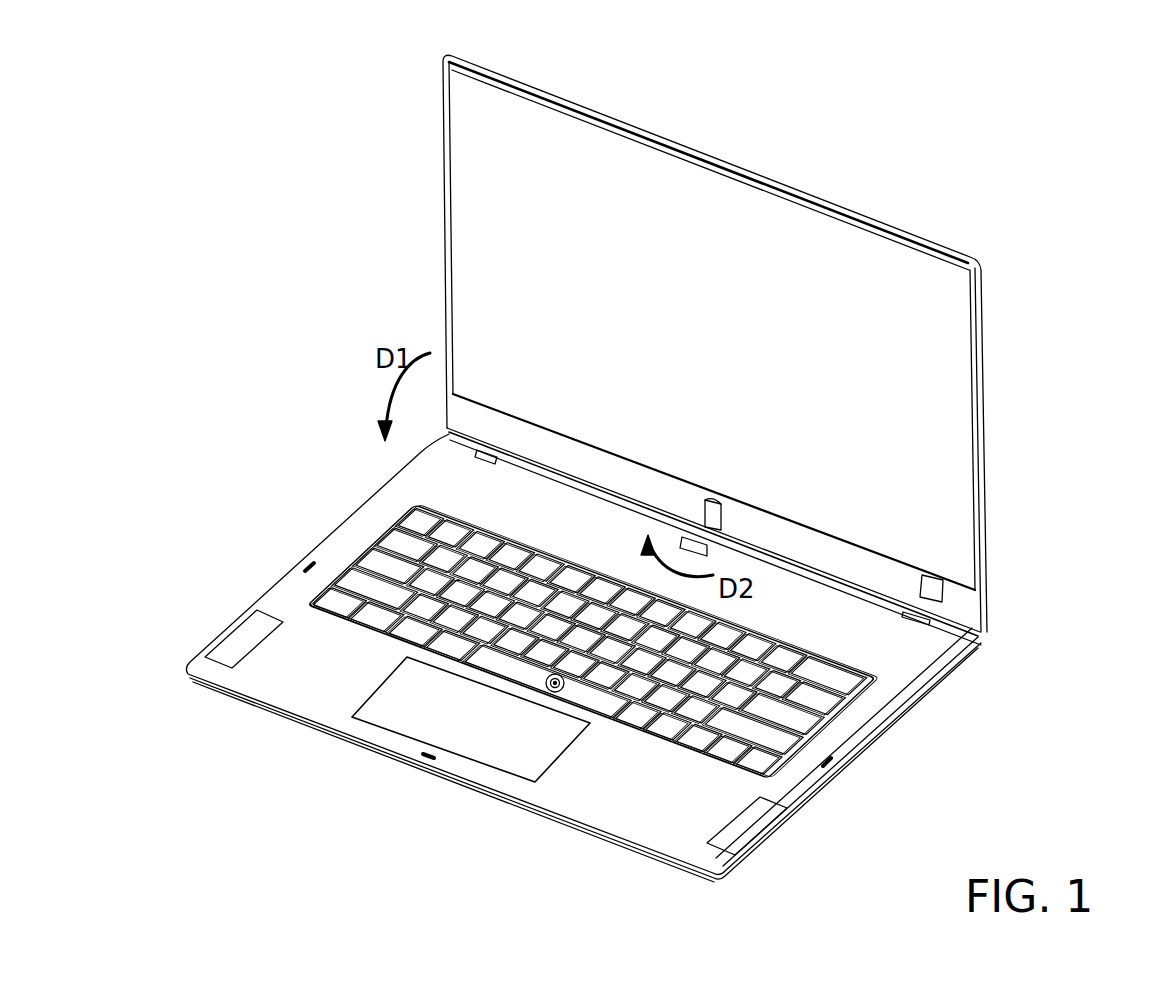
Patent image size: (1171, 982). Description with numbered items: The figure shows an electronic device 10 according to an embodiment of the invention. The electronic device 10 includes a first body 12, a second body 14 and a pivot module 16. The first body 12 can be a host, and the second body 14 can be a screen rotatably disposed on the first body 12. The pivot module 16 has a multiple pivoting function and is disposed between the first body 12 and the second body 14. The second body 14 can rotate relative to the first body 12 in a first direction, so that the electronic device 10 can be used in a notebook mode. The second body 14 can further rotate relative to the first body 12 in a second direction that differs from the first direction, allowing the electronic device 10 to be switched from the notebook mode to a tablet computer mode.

The electronic device 10 is at (670, 468).
The first body 12 is at (905, 653).
The second body 14 is at (933, 360).
The pivot module 16 is at (730, 513).